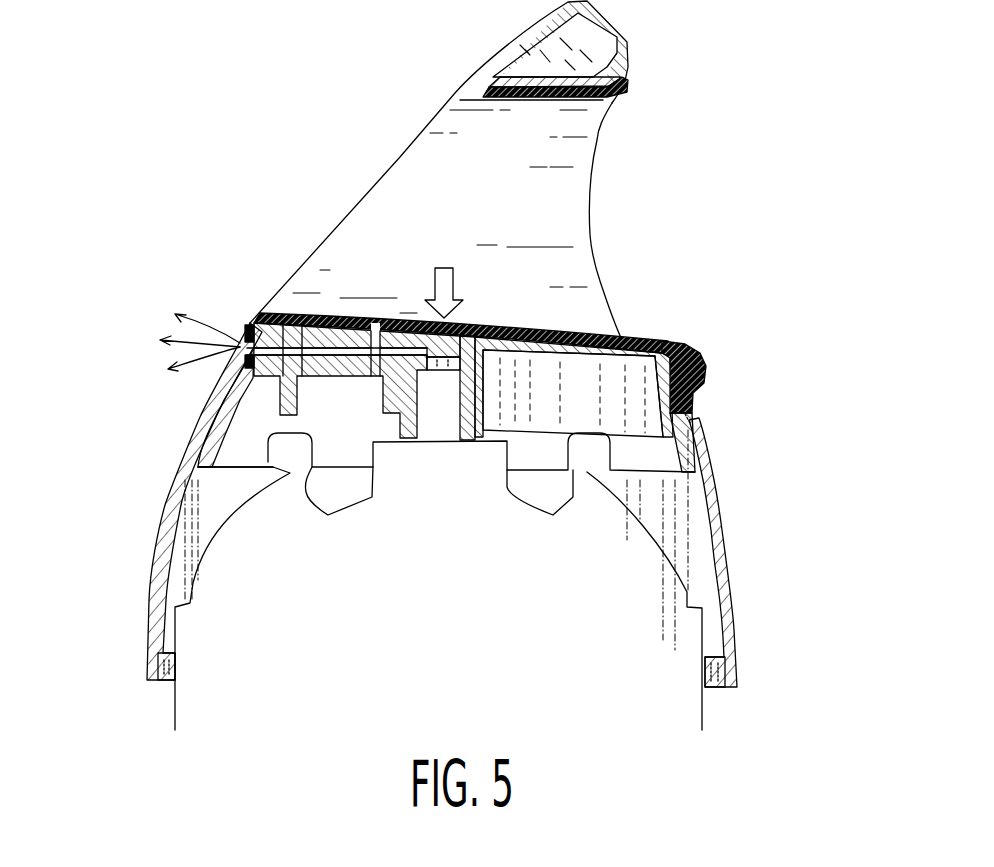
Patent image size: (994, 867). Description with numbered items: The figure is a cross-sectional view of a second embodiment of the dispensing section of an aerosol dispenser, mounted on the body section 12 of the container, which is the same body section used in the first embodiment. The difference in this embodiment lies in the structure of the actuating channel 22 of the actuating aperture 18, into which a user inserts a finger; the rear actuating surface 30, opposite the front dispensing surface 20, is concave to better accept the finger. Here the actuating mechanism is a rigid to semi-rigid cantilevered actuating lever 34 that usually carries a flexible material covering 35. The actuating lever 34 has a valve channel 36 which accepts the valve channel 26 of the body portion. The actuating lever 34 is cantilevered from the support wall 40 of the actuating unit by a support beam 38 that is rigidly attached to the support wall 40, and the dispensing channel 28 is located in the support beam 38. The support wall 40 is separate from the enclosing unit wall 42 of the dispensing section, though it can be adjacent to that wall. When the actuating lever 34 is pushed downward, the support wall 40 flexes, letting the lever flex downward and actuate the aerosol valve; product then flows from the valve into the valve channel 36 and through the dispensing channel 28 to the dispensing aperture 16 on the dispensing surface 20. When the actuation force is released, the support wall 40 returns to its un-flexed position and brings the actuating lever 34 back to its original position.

The body section 12 is at (627, 647).
The dispensing aperture 16 is at (247, 340).
The actuating aperture 18 is at (575, 200).
The dispensing surface 20 is at (230, 380).
The actuating channel 22 is at (612, 113).
The valve channel 26 is at (430, 417).
The dispensing channel 28 is at (337, 315).
The rear actuating surface 30 is at (590, 231).
The actuating lever 34 is at (697, 387).
The flexible material covering 35 is at (700, 352).
The valve channel 36 is at (473, 408).
The support beam 38 is at (262, 395).
The support wall 40 is at (235, 467).
The enclosing unit wall 42 is at (178, 491).